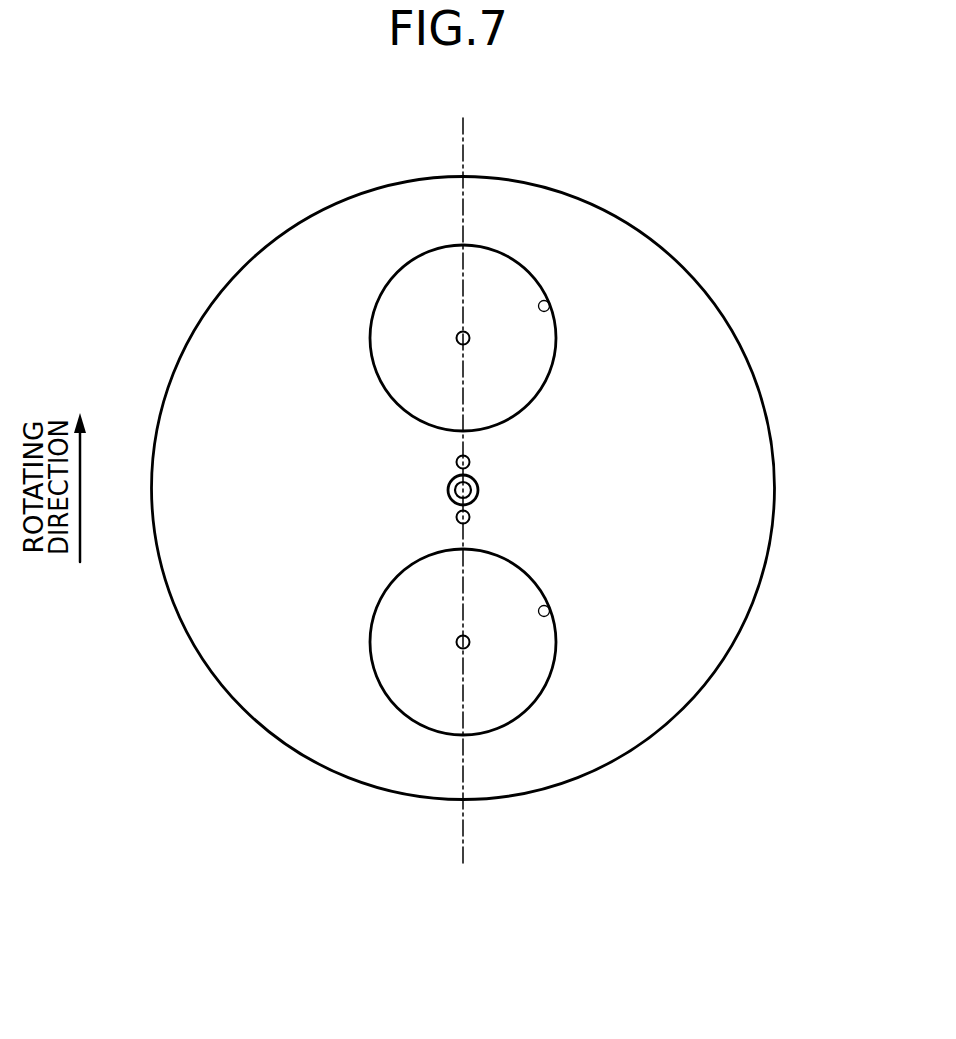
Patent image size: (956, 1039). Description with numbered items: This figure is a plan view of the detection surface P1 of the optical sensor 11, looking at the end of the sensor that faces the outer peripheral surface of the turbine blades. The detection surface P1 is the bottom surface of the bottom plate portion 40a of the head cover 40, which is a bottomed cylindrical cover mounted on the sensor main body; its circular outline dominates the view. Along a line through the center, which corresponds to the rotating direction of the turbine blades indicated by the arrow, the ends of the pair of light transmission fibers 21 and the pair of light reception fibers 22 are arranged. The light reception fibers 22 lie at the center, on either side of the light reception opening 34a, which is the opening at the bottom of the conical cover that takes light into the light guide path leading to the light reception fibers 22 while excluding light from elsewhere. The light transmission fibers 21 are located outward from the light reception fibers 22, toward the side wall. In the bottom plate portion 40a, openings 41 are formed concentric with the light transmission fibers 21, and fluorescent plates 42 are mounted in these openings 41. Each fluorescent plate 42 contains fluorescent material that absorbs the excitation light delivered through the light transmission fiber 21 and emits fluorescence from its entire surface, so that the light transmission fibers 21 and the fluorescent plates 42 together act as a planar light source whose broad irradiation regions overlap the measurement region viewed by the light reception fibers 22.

The optical sensor 11 is at (270, 179).
The head cover 40 is at (775, 516).
The bottom plate portion 40a is at (773, 449).
The detection surface P1 is at (745, 410).
The openings 41 is at (549, 301).
The fluorescent plates 42 is at (553, 372).
The light transmission fibers 21 is at (470, 338).
The light reception fibers 22 is at (470, 462).
The light reception opening 34a is at (479, 490).